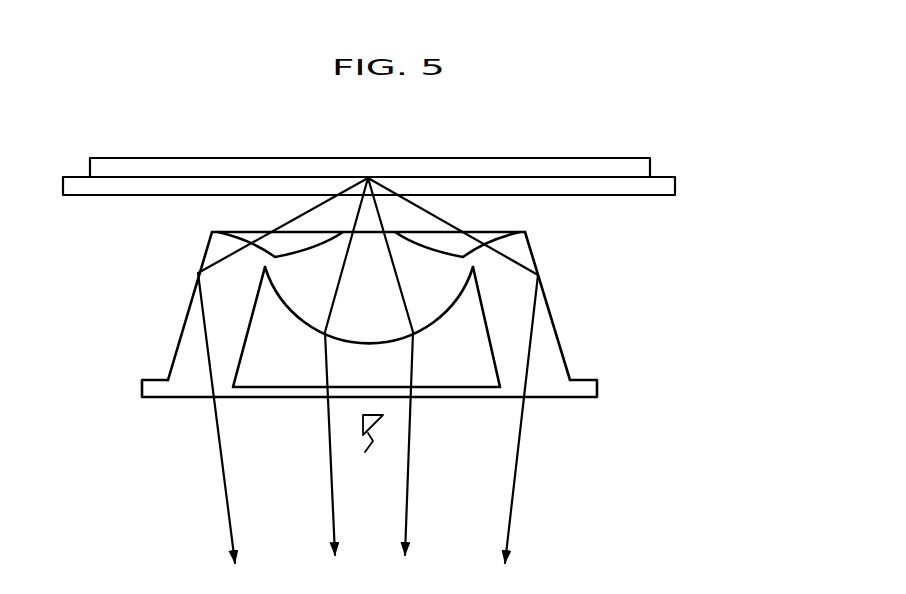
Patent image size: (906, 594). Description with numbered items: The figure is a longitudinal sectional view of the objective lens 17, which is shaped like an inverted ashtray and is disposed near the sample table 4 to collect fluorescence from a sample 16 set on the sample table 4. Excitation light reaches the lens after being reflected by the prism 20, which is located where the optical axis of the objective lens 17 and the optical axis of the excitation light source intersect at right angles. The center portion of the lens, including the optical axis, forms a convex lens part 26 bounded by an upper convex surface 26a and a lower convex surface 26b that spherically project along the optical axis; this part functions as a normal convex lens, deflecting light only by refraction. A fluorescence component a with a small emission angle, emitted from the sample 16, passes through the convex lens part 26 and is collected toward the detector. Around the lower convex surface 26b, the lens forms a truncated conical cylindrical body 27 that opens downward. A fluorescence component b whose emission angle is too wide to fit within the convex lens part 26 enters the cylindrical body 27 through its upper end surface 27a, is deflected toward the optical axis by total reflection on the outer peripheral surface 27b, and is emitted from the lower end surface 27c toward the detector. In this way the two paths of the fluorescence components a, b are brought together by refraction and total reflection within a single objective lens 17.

The sample table 4 is at (677, 180).
The sample 16 is at (535, 158).
The objective lens 17 is at (393, 335).
The prism 20 is at (375, 450).
The convex lens part 26 is at (337, 335).
The upper convex surface 26a is at (289, 249).
The lower convex surface 26b is at (315, 327).
The cylindrical body 27 is at (433, 319).
The upper end surface 27a is at (496, 234).
The outer peripheral surface 27b is at (557, 315).
The lower end surface 27c is at (396, 387).
The fluorescence component a is at (330, 488).
The fluorescence component b is at (225, 488).